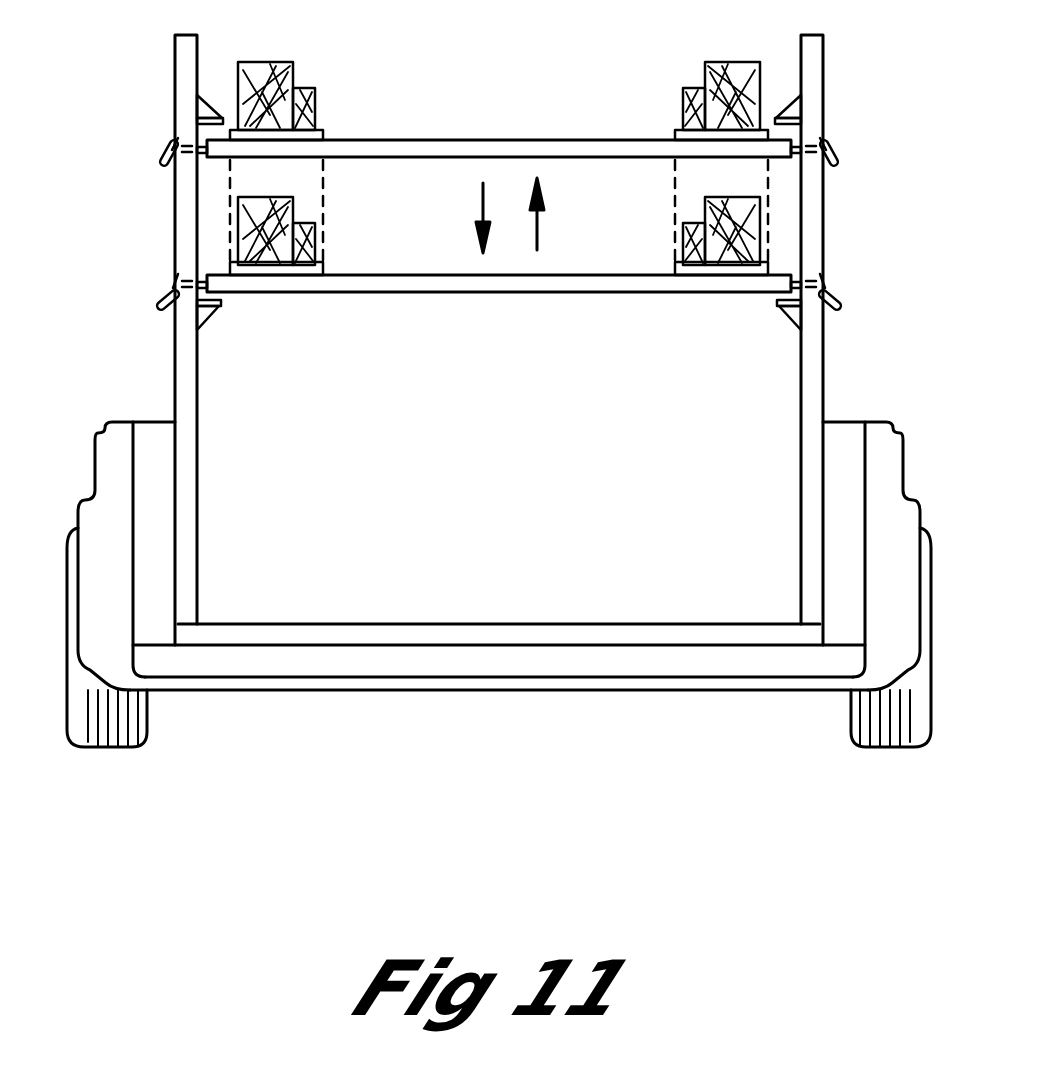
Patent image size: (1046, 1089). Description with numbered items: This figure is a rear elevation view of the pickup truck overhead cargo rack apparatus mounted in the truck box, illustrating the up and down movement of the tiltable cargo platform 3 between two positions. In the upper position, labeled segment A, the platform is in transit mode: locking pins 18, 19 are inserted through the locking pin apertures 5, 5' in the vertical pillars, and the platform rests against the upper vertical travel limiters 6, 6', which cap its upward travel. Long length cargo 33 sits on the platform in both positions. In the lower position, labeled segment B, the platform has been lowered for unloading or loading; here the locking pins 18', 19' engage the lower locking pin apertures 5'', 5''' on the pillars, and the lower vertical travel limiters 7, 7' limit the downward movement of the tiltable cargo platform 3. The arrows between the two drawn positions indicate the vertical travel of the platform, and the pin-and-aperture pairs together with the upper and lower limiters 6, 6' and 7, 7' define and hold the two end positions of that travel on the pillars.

The tiltable cargo platform 3 is at (678, 136).
The locking pin aperture 5 is at (164, 126).
The locking pin aperture 5' is at (829, 122).
The locking pin aperture 5'' is at (161, 261).
The locking pin aperture 5''' is at (833, 261).
The upper vertical travel limiter 6 is at (214, 79).
The upper vertical travel limiter 6' is at (777, 79).
The lower vertical travel limiter 7 is at (229, 329).
The lower vertical travel limiter 7' is at (764, 330).
The locking pin 18 is at (137, 158).
The locking pin 18' is at (137, 295).
The locking pin 19 is at (858, 158).
The locking pin 19' is at (862, 296).
The long length cargo 33 is at (270, 68).
The segment in transit mode A is at (343, 97).
The segment in unloading or loading mode B is at (324, 204).